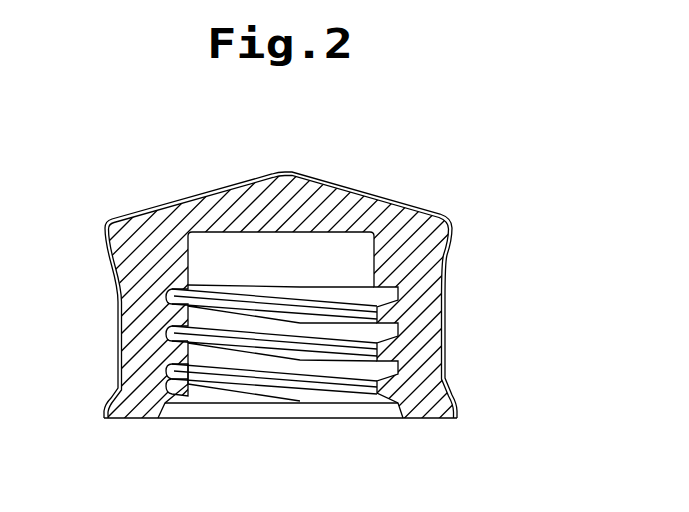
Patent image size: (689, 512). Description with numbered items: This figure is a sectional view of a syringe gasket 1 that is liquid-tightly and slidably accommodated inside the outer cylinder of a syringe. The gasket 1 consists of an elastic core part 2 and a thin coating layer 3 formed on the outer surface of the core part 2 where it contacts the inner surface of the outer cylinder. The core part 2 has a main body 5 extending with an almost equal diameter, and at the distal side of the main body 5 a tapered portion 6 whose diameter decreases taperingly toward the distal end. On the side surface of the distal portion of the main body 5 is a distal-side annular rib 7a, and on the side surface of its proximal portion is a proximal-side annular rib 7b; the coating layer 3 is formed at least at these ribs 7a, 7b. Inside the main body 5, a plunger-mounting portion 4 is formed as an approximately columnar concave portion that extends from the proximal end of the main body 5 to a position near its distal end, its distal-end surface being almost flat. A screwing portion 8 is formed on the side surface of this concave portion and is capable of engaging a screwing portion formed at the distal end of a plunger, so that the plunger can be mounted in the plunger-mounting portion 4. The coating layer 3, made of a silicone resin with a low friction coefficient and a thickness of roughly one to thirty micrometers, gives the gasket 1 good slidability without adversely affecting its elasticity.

The gasket 1 is at (372, 174).
The core part 2 is at (428, 311).
The coating layer 3 is at (118, 332).
The plunger-mounting portion 4 is at (239, 358).
The main body 5 is at (418, 342).
The tapered portion 6 is at (183, 212).
The distal-side annular rib 7a is at (457, 235).
The proximal-side annular rib 7b is at (457, 408).
The screwing portion 8 is at (308, 350).